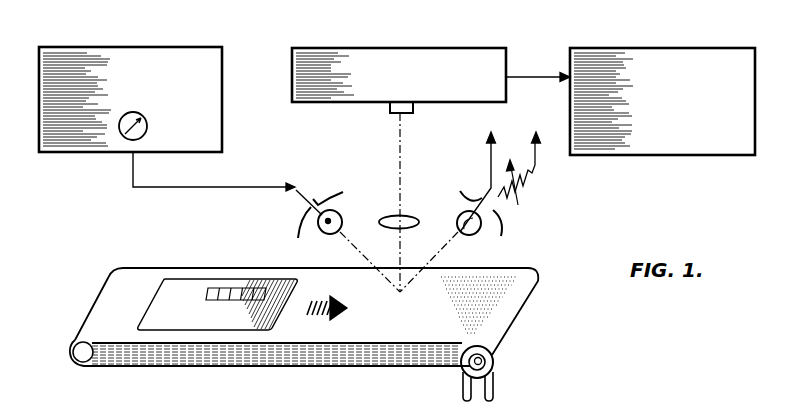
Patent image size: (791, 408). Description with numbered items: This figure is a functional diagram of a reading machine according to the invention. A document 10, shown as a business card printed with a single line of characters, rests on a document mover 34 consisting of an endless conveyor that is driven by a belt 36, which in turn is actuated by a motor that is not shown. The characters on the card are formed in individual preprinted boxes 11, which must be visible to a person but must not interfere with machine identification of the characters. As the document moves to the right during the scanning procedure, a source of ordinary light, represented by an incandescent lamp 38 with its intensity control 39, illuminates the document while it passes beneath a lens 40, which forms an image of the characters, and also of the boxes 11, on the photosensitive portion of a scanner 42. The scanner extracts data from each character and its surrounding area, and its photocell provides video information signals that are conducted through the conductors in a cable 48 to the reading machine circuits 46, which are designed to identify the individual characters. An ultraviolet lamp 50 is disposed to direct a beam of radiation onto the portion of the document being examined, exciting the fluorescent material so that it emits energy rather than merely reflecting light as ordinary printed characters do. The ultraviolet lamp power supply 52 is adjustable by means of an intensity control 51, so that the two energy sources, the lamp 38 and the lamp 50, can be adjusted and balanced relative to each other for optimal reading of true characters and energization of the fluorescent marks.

The document 10 is at (181, 287).
The preprinted boxes 11 is at (222, 300).
The document mover 34 is at (372, 368).
The belt 36 is at (461, 384).
The incandescent lamp 38 is at (475, 234).
The intensity control 39 is at (521, 181).
The lens 40 is at (408, 214).
The scanner 42 is at (382, 48).
The reading machine circuits 46 is at (632, 48).
The cable 48 is at (528, 72).
The ultraviolet lamp 50 is at (325, 235).
The intensity control 51 is at (147, 127).
The ultraviolet lamp power supply 52 is at (103, 47).